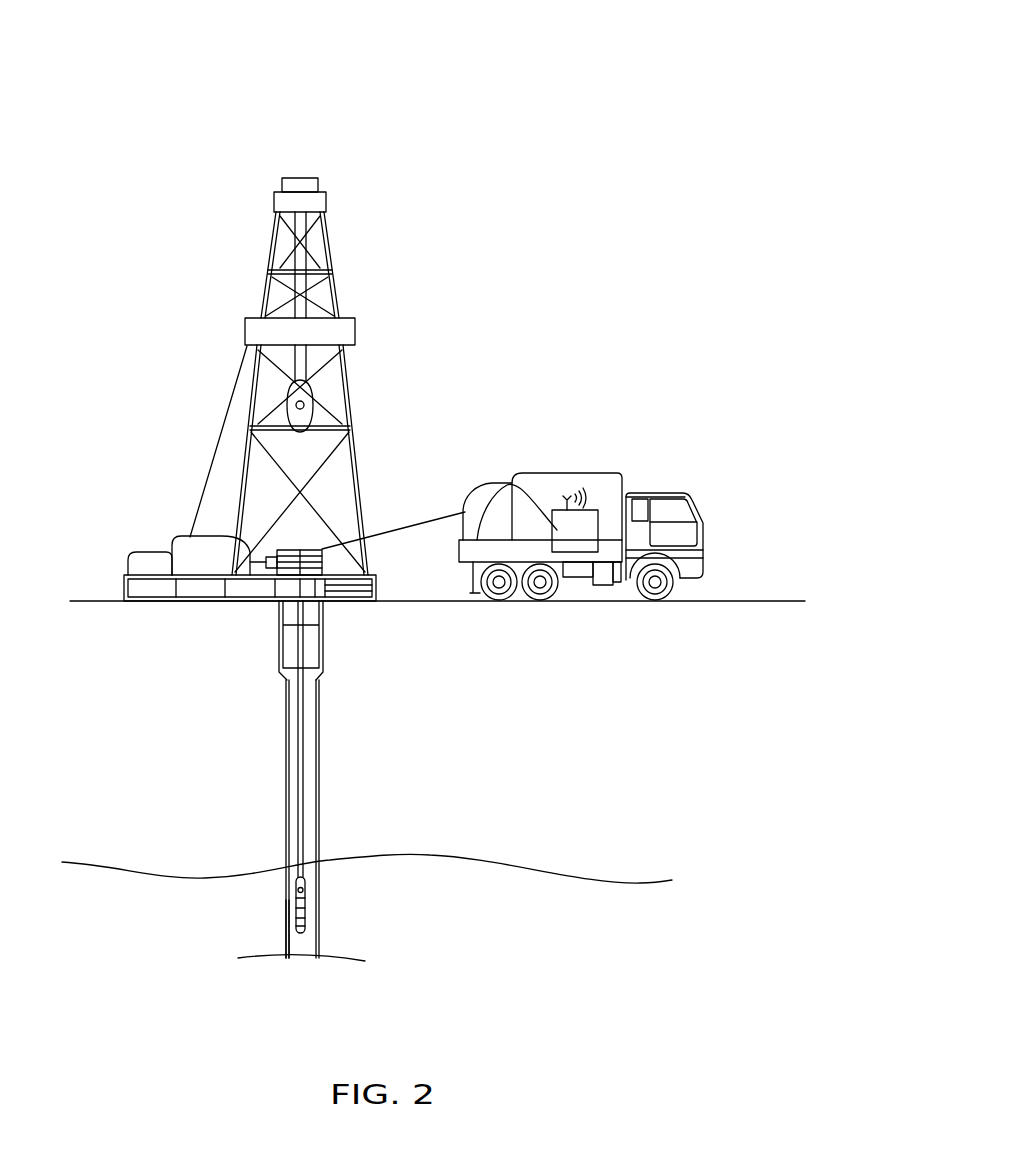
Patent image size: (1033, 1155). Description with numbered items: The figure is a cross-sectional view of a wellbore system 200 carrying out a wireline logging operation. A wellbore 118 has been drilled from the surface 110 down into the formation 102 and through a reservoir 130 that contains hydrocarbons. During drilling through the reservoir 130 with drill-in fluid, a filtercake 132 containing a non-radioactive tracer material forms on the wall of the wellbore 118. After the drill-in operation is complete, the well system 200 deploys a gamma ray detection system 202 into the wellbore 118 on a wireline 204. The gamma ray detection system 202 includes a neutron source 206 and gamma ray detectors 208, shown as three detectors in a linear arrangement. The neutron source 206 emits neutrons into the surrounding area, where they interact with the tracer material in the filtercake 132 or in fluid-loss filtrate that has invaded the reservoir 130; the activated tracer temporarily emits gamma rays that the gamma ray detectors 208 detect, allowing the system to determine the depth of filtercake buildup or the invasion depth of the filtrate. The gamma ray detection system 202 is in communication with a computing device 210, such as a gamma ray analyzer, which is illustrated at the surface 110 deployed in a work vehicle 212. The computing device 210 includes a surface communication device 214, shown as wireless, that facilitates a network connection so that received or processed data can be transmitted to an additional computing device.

The wellbore system 200 is at (676, 79).
The formation 102 is at (108, 654).
The surface 110 is at (92, 600).
The wellbore 118 is at (288, 740).
The wireline 204 is at (300, 786).
The gamma ray detection system 202 is at (303, 911).
The neutron source 206 is at (294, 890).
The gamma ray detectors 208 is at (306, 922).
The filtercake 132 is at (288, 920).
The reservoir 130 is at (420, 958).
The computing device 210 is at (477, 492).
The work vehicle 212 is at (609, 517).
The surface communication device 214 is at (578, 490).